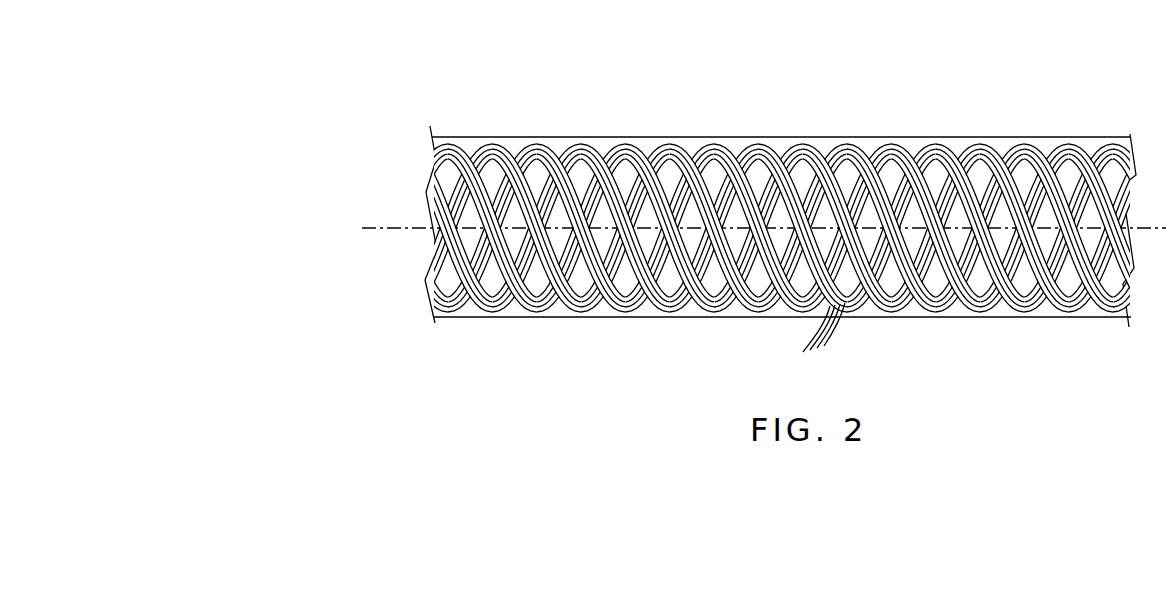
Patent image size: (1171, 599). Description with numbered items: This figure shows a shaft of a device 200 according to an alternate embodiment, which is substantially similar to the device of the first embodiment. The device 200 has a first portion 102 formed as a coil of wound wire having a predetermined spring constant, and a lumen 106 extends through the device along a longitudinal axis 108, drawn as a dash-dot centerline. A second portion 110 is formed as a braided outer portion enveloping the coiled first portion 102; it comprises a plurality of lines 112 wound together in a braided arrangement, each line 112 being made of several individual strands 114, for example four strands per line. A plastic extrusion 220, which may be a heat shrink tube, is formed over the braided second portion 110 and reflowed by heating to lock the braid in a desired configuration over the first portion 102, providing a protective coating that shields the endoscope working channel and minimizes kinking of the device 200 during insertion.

The device 200 is at (404, 70).
The first portion 102 is at (448, 176).
The plastic extrusion 220 is at (556, 138).
The lines 112 is at (815, 147).
The second portion 110 is at (1092, 146).
The lumen 106 is at (401, 204).
The longitudinal axis 108 is at (373, 233).
The strands 114 is at (820, 343).